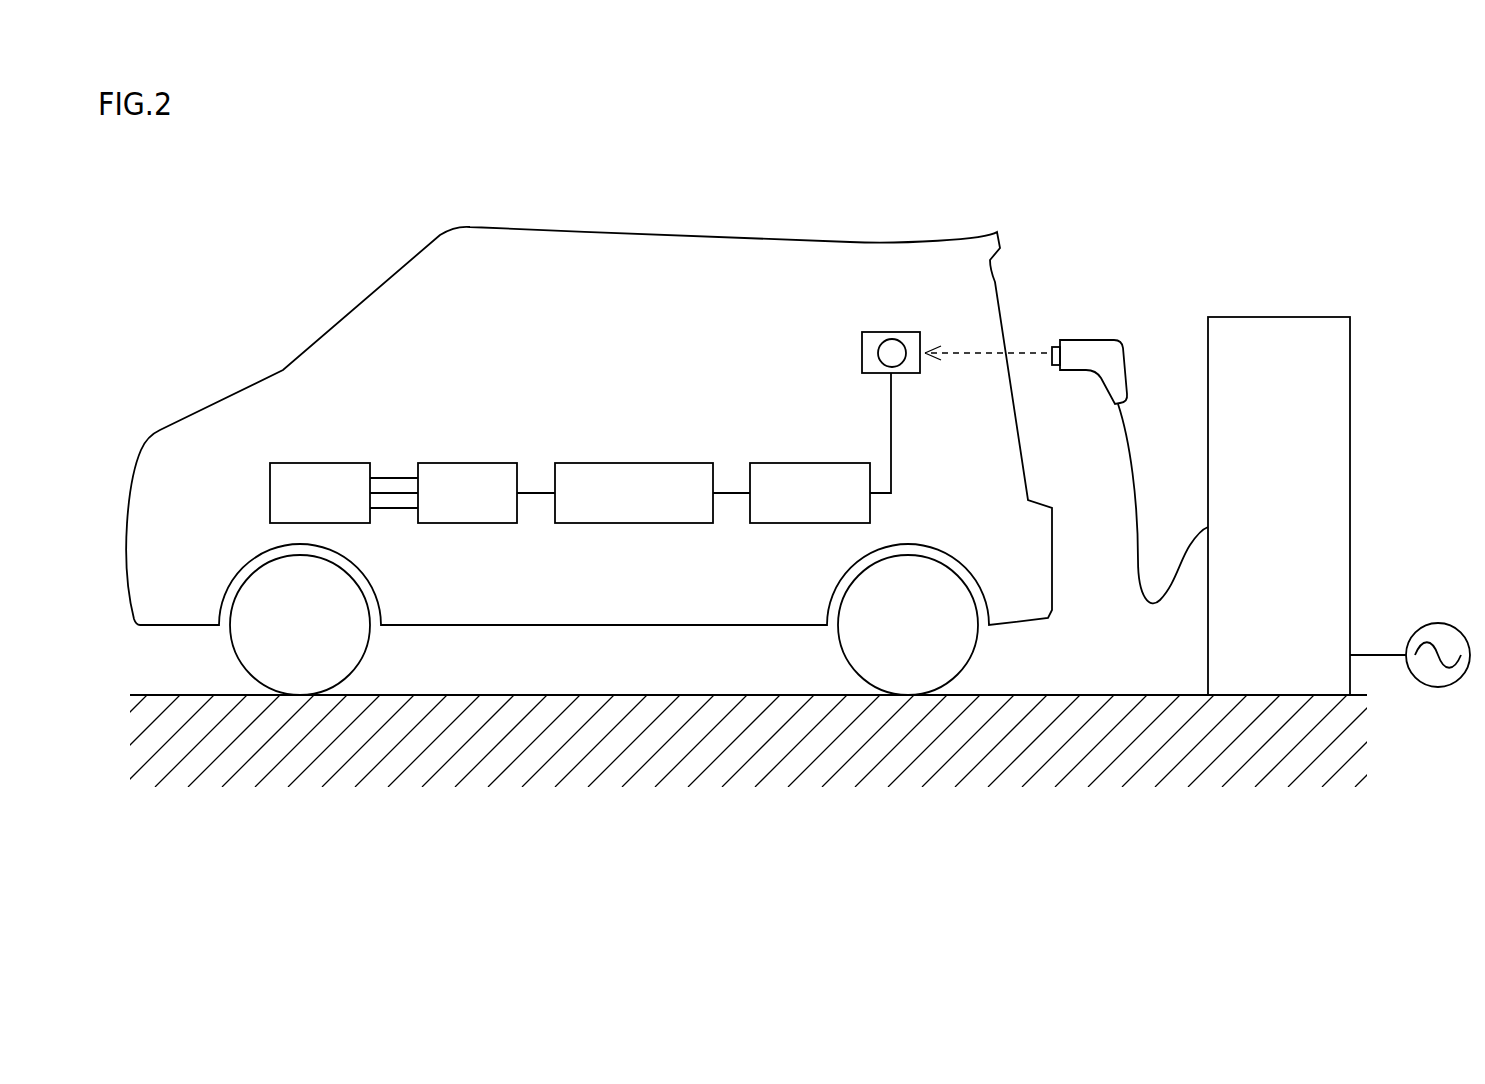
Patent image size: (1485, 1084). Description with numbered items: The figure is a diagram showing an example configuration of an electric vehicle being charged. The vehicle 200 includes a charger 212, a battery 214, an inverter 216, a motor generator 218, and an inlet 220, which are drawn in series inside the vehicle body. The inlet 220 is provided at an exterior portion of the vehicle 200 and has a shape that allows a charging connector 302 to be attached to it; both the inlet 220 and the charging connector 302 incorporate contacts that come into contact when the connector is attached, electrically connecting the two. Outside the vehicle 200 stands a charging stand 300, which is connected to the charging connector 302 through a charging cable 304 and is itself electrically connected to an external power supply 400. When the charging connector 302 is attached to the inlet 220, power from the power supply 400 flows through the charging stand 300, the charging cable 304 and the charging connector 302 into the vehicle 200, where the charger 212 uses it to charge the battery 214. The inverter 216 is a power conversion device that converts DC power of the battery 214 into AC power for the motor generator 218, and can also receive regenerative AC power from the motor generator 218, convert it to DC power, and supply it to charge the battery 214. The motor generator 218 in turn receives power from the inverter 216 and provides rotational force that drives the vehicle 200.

The vehicle 200 is at (706, 231).
The charger 212 is at (820, 463).
The battery 214 is at (634, 463).
The inverter 216 is at (468, 463).
The motor generator 218 is at (318, 463).
The inlet 220 is at (906, 374).
The charging stand 300 is at (1300, 317).
The charging connector 302 is at (1090, 340).
The charging cable 304 is at (1158, 605).
The power supply 400 is at (1435, 623).